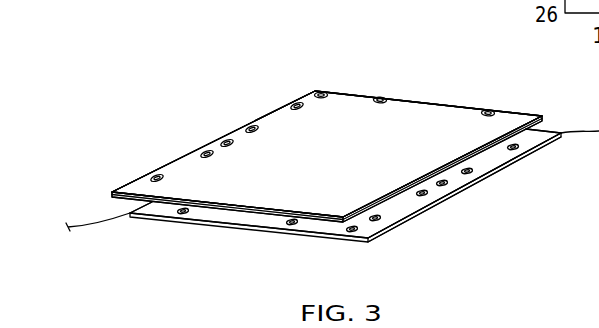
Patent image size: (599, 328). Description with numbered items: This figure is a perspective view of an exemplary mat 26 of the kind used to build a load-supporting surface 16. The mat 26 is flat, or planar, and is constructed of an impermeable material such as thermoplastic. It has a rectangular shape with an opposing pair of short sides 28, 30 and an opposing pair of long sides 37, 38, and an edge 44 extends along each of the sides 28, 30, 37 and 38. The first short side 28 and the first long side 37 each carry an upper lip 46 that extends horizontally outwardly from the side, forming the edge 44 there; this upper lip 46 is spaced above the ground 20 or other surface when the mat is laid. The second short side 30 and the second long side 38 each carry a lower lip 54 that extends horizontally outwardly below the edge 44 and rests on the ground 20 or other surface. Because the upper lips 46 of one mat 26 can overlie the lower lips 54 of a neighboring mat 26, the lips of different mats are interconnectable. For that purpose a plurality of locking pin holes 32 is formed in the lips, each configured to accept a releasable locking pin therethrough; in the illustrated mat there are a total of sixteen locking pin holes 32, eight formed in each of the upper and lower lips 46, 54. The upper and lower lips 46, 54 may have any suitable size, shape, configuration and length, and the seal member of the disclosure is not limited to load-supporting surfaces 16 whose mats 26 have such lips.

The load-supporting surface 16 is at (381, 39).
The ground 20 is at (105, 222).
The mat 26 is at (310, 175).
The first short side 28 is at (443, 122).
The second short side 30 is at (194, 234).
The locking pin holes 32 is at (319, 91).
The first long side 37 is at (189, 82).
The second long side 38 is at (471, 194).
The edge 44 is at (236, 116).
The upper lip 46 is at (183, 166).
The lower lip 54 is at (248, 217).